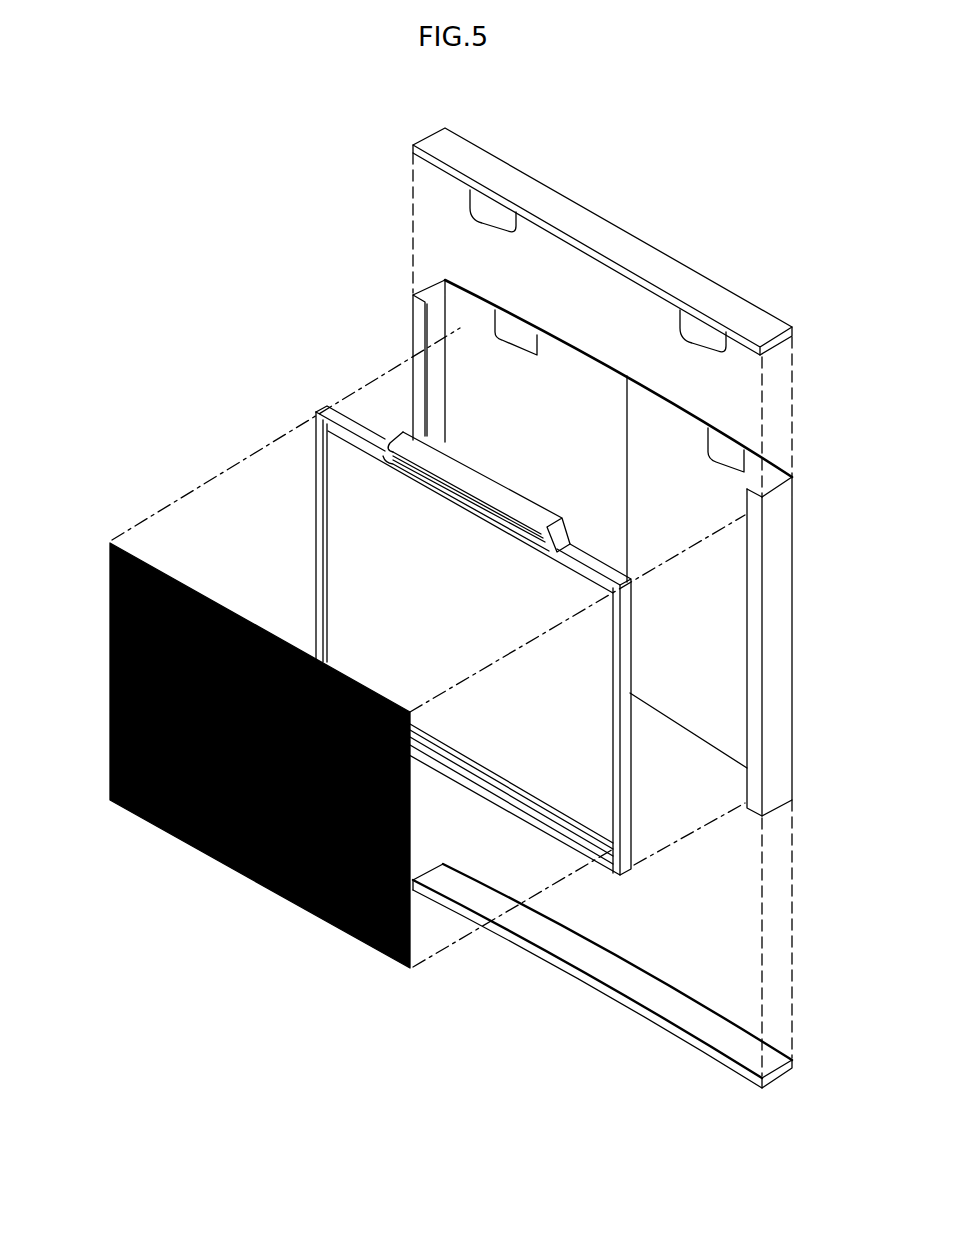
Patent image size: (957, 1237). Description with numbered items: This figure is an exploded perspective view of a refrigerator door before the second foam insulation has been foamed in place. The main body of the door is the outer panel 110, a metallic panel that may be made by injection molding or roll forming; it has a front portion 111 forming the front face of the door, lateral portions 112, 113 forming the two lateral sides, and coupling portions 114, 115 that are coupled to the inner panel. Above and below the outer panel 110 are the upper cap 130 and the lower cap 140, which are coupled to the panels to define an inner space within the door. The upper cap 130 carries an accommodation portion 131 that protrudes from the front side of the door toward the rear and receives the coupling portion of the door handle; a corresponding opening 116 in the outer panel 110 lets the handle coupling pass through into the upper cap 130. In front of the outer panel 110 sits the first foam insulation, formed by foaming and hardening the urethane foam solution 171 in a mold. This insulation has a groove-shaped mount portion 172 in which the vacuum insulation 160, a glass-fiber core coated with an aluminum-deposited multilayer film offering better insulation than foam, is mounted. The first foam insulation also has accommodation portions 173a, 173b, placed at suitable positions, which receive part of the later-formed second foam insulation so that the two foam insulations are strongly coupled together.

The outer panel 110 is at (584, 524).
The front portion 111 is at (590, 355).
The lateral portion 112 is at (428, 287).
The lateral portion 113 is at (802, 646).
The coupling portion 114 is at (417, 332).
The coupling portion 115 is at (754, 572).
The opening 116 is at (513, 335).
The upper cap 130 is at (602, 239).
The accommodation portion 131 is at (492, 204).
The lower cap 140 is at (673, 1012).
The vacuum insulation 160 is at (110, 576).
The urethane foam solution 171 is at (423, 625).
The mount portion 172 is at (333, 538).
The accommodation portion 173a is at (355, 442).
The accommodation portion 173b is at (553, 818).